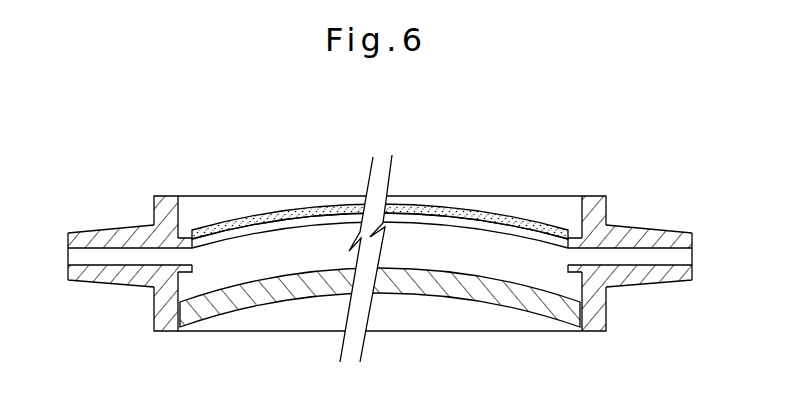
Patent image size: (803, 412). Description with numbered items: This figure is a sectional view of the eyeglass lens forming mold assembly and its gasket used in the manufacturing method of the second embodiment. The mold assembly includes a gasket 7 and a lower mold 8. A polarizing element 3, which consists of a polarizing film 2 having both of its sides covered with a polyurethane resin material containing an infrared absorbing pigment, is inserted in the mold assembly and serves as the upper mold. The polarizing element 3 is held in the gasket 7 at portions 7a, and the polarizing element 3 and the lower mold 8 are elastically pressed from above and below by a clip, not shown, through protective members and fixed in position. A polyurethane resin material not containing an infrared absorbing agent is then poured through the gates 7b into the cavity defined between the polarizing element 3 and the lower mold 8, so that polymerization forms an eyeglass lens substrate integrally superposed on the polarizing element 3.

The polarizing film 2 is at (315, 220).
The polarizing element 3 is at (461, 213).
The gasket 7 is at (162, 307).
The lip portion 7a is at (183, 237).
The gates 7b is at (112, 238).
The lower mold 8 is at (417, 287).